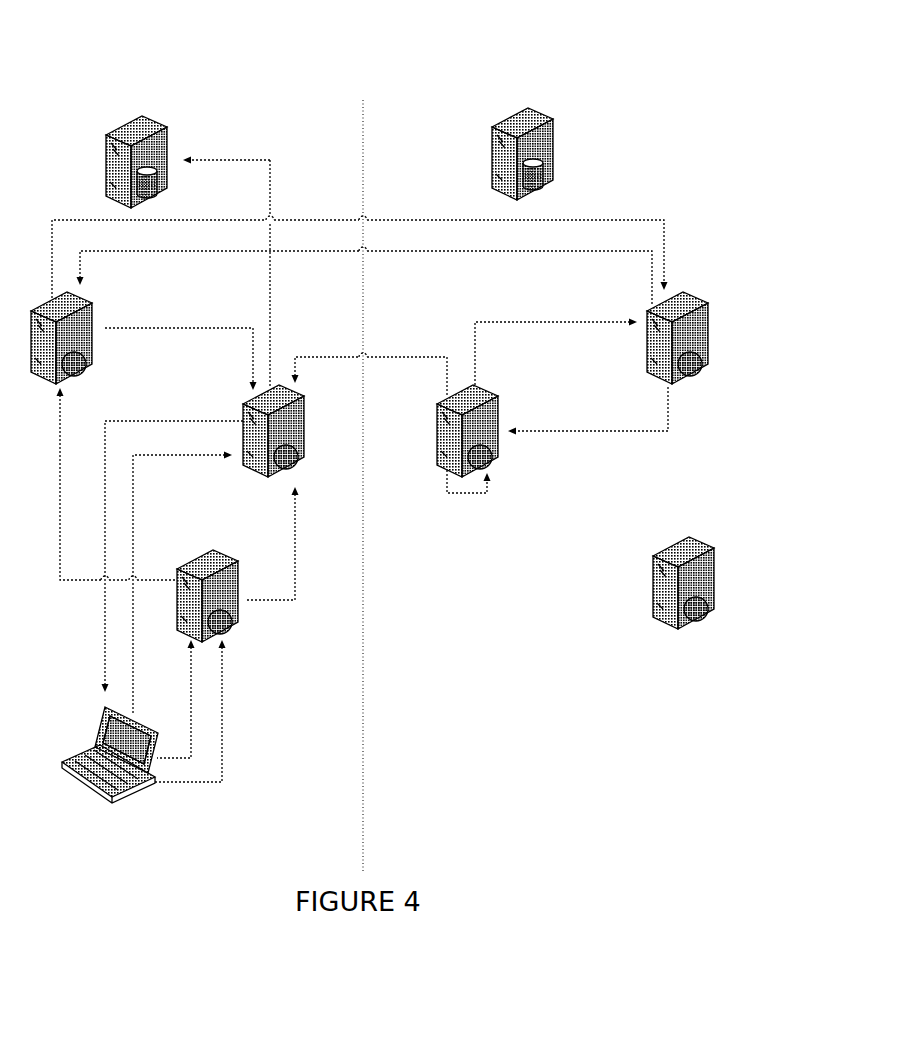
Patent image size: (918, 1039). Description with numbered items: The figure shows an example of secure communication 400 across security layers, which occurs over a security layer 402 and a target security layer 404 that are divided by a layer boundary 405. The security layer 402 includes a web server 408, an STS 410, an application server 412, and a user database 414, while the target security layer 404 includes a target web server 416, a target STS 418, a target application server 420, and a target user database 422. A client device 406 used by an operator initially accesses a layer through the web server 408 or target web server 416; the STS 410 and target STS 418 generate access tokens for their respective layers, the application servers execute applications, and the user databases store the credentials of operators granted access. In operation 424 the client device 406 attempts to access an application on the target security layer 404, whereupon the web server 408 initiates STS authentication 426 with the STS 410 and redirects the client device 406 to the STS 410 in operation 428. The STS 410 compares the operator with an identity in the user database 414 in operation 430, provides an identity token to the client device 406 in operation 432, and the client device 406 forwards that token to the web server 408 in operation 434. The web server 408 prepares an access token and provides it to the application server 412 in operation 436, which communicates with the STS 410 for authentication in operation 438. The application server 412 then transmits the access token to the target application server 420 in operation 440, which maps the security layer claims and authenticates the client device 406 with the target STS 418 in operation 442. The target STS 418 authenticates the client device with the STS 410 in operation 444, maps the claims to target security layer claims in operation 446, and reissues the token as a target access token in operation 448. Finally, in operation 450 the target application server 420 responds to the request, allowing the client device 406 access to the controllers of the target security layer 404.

The secure communication 400 is at (323, 36).
The security layer 402 is at (193, 76).
The target security layer 404 is at (535, 78).
The layer boundary 405 is at (363, 538).
The client device 406 is at (128, 800).
The web server 408 is at (222, 547).
The STS 410 is at (305, 423).
The application server 412 is at (94, 350).
The user database 414 is at (167, 170).
The target web server 416 is at (686, 625).
The target STS 418 is at (437, 452).
The target application server 420 is at (674, 379).
The target user database 422 is at (507, 118).
The operation 424 is at (190, 682).
The STS authentication 426 is at (300, 556).
The operation 428 is at (135, 637).
The operation 430 is at (243, 158).
The operation 432 is at (100, 646).
The operation 434 is at (205, 782).
The operation 436 is at (87, 583).
The operation 438 is at (164, 330).
The operation 440 is at (447, 218).
The operation 442 is at (566, 432).
The operation 444 is at (389, 356).
The operation 446 is at (476, 497).
The operation 448 is at (553, 323).
The operation 450 is at (194, 258).